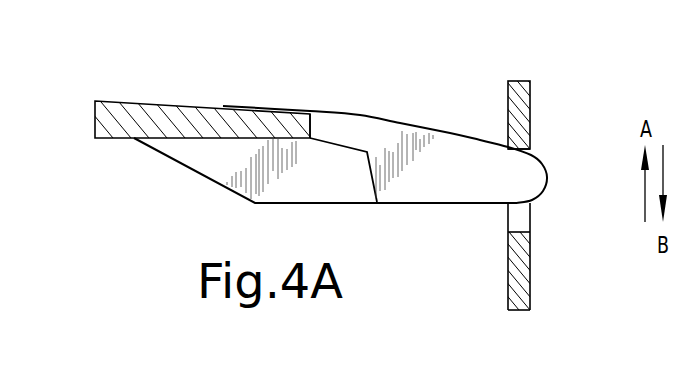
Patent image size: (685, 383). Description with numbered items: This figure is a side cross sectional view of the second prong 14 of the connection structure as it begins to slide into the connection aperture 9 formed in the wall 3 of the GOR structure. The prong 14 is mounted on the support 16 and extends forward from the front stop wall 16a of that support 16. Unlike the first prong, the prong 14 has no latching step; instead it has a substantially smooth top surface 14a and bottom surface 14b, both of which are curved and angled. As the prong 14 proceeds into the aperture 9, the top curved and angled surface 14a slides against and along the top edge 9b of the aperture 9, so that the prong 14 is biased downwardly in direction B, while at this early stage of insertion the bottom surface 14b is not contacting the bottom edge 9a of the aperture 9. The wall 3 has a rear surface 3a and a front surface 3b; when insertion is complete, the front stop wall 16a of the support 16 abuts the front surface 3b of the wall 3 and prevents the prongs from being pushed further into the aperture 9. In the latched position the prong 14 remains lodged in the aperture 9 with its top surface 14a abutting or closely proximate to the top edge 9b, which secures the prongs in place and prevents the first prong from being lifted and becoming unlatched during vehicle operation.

The wall 3 is at (511, 183).
The rear surface of the wall 3a is at (531, 257).
The front surface of the wall 3b is at (508, 280).
The aperture 9 is at (531, 213).
The bottom edge of the aperture 9a is at (523, 221).
The top edge of the aperture 9b is at (531, 156).
The second prong 14 is at (340, 129).
The top surface of the second prong 14a is at (460, 135).
The bottom surface of the second prong 14b is at (353, 203).
The support 16 is at (110, 118).
The front stop wall of the support 16a is at (318, 117).